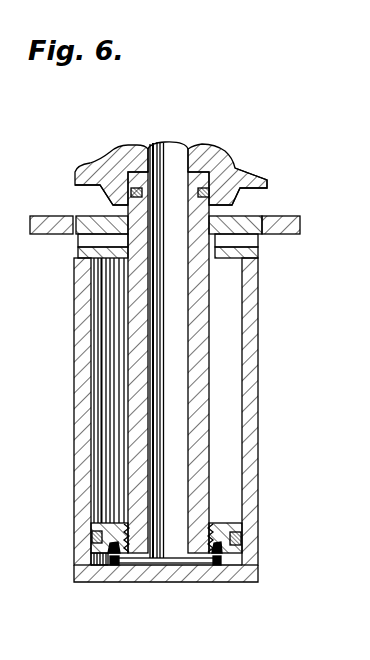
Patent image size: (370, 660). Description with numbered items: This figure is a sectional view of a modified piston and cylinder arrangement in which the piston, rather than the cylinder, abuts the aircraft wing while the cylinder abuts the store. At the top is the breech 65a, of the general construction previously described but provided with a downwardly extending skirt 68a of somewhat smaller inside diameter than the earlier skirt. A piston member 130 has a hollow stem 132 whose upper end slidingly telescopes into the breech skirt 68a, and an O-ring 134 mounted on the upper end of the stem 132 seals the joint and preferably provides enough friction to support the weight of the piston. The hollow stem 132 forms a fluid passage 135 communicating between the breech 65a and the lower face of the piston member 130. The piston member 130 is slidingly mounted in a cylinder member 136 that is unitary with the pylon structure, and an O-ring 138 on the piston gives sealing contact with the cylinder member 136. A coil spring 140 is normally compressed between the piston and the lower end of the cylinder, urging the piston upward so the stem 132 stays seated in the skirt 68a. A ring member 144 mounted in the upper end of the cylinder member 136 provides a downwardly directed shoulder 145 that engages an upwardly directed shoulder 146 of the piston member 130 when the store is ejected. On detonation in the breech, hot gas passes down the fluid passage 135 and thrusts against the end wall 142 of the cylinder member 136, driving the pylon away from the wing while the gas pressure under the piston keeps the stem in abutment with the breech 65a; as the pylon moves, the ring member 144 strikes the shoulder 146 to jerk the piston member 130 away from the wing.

The breech 65a is at (238, 153).
The O-ring 134 is at (237, 172).
The skirt 68a is at (242, 195).
The ring member 144 is at (234, 244).
The shoulder 145 is at (234, 262).
The stem 132 is at (210, 338).
The fluid passage 135 is at (188, 398).
The cylinder member 136 is at (258, 452).
The shoulder 146 is at (227, 523).
The O-ring 138 is at (238, 540).
The piston member 130 is at (103, 563).
The coil spring 140 is at (117, 558).
The end wall 142 is at (163, 578).